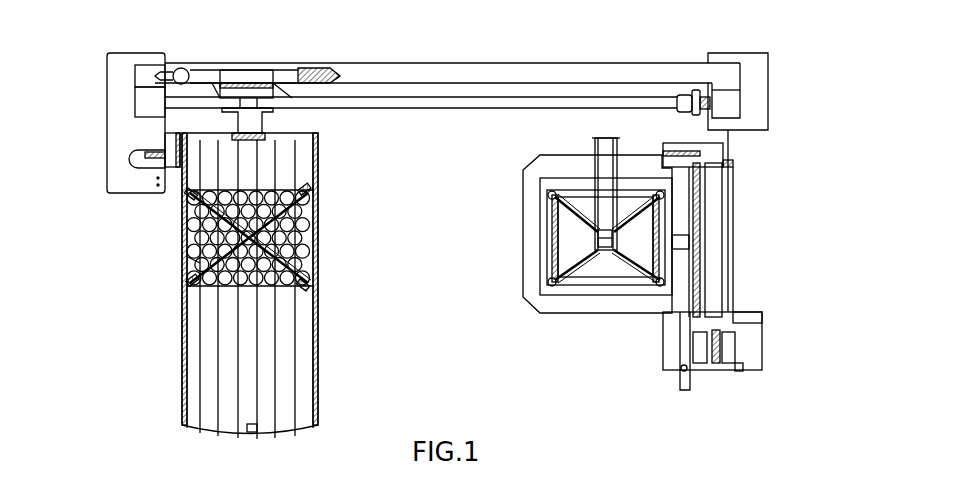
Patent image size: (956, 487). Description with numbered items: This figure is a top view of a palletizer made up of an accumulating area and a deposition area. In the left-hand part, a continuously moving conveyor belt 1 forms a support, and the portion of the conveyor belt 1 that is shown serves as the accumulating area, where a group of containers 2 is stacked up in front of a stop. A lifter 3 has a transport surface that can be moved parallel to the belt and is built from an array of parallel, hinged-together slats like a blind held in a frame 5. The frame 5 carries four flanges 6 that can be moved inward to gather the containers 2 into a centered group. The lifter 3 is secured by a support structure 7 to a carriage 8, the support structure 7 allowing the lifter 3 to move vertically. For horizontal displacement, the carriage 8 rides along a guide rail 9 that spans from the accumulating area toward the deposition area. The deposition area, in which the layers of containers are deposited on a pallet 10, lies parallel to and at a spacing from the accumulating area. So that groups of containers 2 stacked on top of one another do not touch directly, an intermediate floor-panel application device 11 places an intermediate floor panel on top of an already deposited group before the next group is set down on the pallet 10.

The conveyor belt 1 is at (190, 356).
The containers 2 is at (314, 212).
The lifter 3 is at (314, 190).
The frame 5 is at (193, 260).
The flanges 6 is at (314, 157).
The support structure 7 is at (250, 127).
The carriage 8 is at (267, 73).
The guide rail 9 is at (530, 65).
The pallet 10 is at (600, 288).
The intermediate floor-panel application device 11 is at (600, 175).